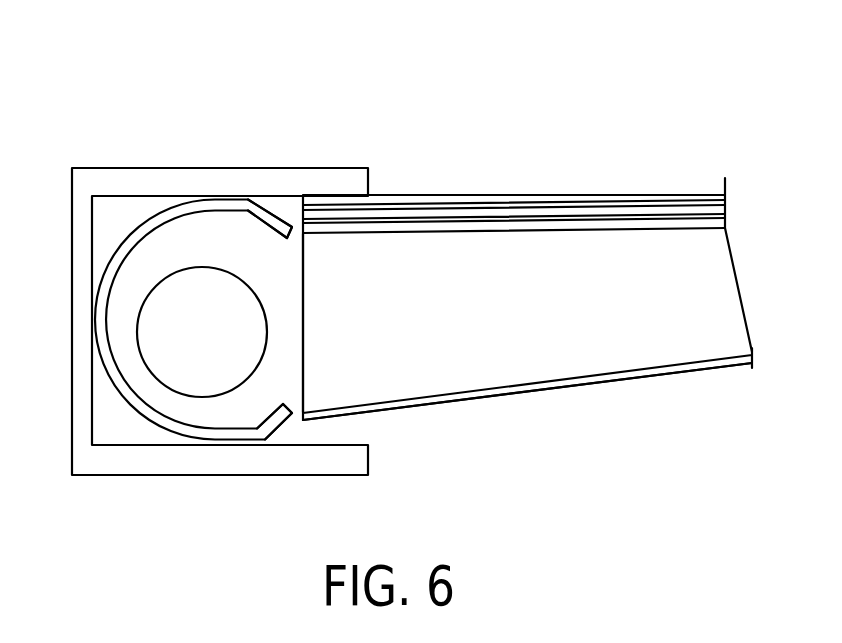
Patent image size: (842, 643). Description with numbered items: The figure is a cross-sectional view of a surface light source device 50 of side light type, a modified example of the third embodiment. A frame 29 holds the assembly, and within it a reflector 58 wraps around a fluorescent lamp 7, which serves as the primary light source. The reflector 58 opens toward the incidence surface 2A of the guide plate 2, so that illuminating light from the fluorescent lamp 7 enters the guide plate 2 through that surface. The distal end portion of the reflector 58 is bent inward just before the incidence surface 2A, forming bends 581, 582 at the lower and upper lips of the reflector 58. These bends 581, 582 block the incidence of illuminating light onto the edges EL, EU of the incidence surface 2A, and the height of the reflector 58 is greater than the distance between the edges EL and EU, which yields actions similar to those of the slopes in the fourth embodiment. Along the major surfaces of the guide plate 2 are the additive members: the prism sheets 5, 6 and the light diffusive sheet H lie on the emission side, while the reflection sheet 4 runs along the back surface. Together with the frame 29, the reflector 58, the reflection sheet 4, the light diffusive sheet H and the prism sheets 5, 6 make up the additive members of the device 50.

The surface light source device 50 is at (190, 93).
The frame 29 is at (325, 458).
The reflector 58 is at (150, 225).
The bend 582 is at (266, 220).
The bend 581 is at (275, 425).
The fluorescent lamp 7 is at (202, 388).
The guide plate 2 is at (688, 352).
The incidence surface 2A is at (305, 292).
The prism sheet 6 is at (470, 196).
The prism sheet 5 is at (545, 207).
The light diffusive sheet H is at (665, 228).
The edge EU is at (308, 234).
The edge EL is at (308, 412).
The reflection sheet 4 is at (568, 388).